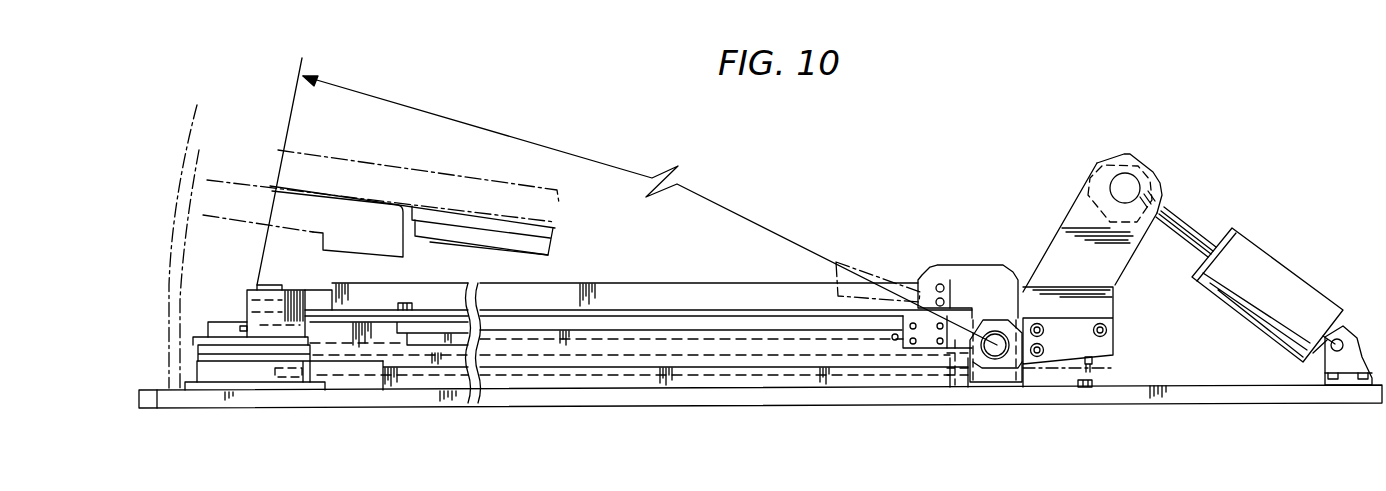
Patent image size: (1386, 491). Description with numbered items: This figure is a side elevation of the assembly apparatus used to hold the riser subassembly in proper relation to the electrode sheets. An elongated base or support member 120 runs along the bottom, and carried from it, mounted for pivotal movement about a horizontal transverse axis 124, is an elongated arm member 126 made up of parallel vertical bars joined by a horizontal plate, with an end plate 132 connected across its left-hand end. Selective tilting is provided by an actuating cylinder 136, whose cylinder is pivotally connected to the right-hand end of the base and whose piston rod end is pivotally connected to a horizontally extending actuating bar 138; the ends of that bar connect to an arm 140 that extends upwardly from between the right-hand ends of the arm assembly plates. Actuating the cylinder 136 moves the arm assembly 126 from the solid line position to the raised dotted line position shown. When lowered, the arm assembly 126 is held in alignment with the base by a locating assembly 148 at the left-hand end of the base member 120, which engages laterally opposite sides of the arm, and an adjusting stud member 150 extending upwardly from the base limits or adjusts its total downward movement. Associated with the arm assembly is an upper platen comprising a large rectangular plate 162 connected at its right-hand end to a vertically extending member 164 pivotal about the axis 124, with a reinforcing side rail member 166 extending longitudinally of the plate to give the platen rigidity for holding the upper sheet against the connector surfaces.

The base member 120 is at (334, 409).
The horizontal transverse axis 124 is at (997, 355).
The arm member 126 is at (236, 182).
The end plate 132 is at (170, 332).
The actuating cylinder 136 is at (1288, 268).
The actuating bar 138 is at (1130, 187).
The arm 140 is at (1125, 257).
The locating assembly 148 is at (240, 396).
The adjusting stud member 150 is at (157, 393).
The rectangular plate 162 is at (690, 315).
The vertically extending member 164 is at (968, 265).
The reinforcing side rail member 166 is at (628, 290).